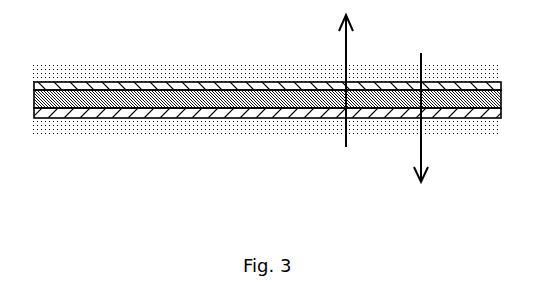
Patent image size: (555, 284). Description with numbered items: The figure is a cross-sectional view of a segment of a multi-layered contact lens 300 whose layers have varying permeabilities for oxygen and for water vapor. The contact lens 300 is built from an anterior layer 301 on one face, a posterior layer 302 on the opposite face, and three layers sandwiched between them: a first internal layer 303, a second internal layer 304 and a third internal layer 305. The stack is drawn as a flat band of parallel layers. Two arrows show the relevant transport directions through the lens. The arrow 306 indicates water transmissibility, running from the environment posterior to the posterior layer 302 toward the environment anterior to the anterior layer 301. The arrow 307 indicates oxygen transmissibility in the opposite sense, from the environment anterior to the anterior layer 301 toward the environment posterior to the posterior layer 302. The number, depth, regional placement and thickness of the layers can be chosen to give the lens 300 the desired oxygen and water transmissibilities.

The contact lens 300 is at (280, 106).
The anterior layer 301 is at (212, 73).
The posterior layer 302 is at (124, 123).
The first internal layer 303 is at (185, 113).
The second internal layer 304 is at (104, 86).
The third internal layer 305 is at (158, 100).
The arrow 306 is at (344, 52).
The arrow 307 is at (419, 152).